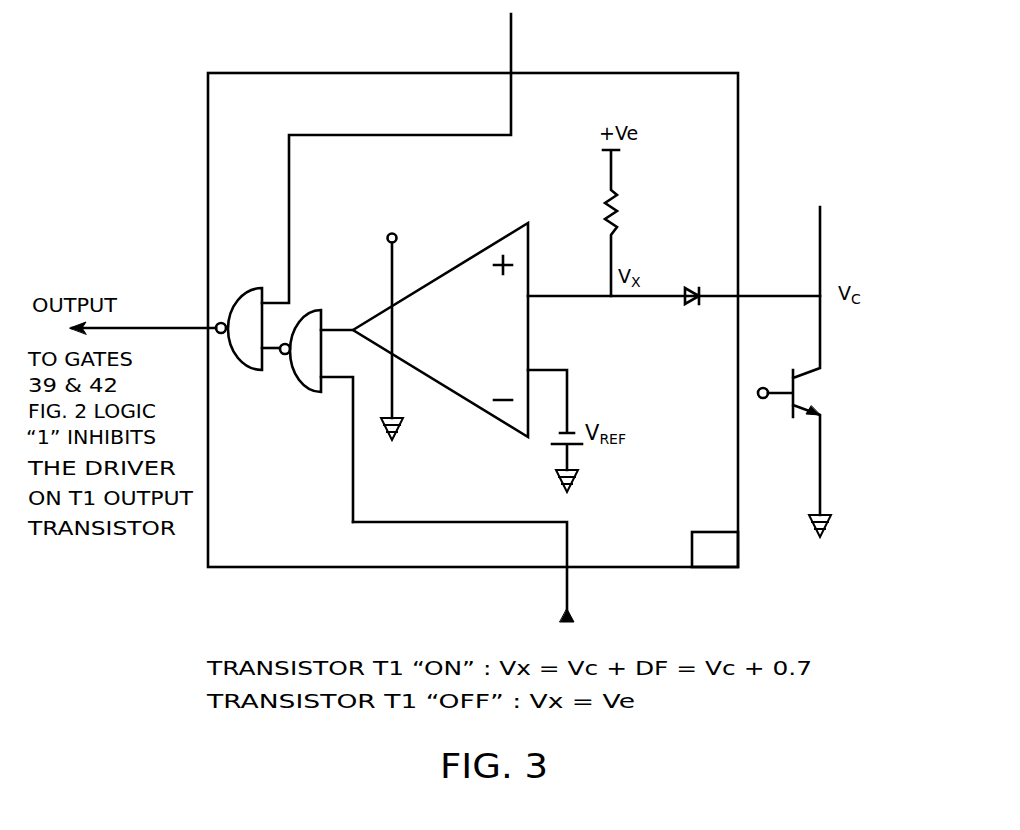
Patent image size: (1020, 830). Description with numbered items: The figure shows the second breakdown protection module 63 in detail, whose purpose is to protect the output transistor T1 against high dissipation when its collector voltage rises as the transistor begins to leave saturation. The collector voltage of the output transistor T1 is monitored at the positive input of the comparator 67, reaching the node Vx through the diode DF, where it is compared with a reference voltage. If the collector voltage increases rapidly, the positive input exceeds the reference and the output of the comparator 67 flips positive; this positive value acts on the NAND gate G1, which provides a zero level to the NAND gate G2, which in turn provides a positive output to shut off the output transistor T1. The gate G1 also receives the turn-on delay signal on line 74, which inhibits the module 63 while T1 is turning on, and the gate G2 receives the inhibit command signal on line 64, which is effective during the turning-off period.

The second breakdown protection module 63 is at (473, 320).
The inhibit signal line 64 is at (511, 27).
The comparator 67 is at (470, 256).
The turn-on delay signal line 74 is at (390, 522).
The NAND gate G1 is at (311, 384).
The NAND gate G2 is at (237, 293).
The output transistor T1 is at (865, 372).
The diode DF is at (690, 280).